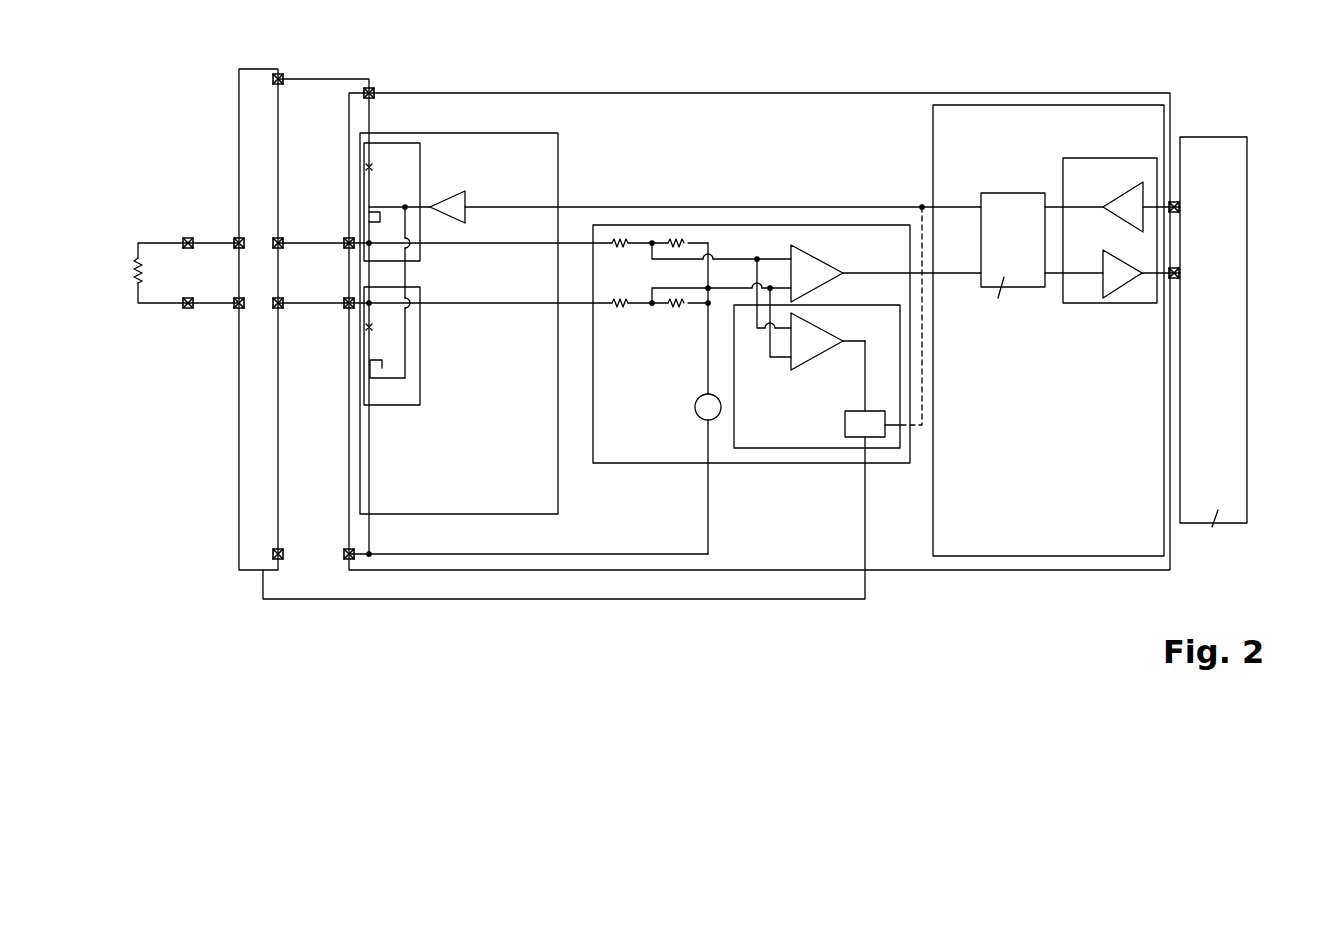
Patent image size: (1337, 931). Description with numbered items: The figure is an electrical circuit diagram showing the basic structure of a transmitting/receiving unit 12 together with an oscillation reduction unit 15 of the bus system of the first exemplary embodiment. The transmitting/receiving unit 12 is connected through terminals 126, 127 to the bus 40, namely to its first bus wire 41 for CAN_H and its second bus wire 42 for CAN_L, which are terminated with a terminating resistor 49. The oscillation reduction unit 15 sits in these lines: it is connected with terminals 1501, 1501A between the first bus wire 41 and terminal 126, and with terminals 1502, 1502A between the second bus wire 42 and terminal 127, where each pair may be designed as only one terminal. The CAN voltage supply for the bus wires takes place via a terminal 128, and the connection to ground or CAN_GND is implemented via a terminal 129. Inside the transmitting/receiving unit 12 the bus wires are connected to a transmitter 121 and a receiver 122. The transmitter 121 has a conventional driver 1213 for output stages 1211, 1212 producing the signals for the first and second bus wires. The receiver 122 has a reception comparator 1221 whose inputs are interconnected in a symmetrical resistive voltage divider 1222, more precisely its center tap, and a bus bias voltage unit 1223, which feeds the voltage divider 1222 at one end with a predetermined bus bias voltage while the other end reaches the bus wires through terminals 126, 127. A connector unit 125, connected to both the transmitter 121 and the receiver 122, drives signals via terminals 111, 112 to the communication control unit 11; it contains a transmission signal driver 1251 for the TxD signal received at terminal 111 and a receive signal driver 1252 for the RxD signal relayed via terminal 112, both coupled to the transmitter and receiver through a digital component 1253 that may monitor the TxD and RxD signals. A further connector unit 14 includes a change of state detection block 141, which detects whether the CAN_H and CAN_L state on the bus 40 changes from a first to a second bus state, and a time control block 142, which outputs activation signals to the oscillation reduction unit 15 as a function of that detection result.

The communication control unit 11 is at (1208, 137).
The transmitting/receiving unit 12 is at (791, 93).
The connector unit 14 is at (793, 450).
The oscillation reduction unit 15 is at (253, 69).
The bus 40 is at (214, 216).
The first bus wire 41 is at (188, 243).
The second bus wire 42 is at (194, 310).
The terminating resistor 49 is at (136, 259).
The terminal 111 is at (1179, 204).
The terminal 112 is at (1179, 276).
The transmitter 121 is at (560, 160).
The receiver 122 is at (641, 463).
The connector unit 125 is at (1069, 99).
The terminal 126 is at (347, 241).
The terminal 127 is at (347, 305).
The terminal 128 is at (372, 87).
The terminal 129 is at (346, 552).
The change of state detection block 141 is at (820, 352).
The time control block 142 is at (845, 425).
The output stage 1211 is at (422, 174).
The output stage 1212 is at (422, 391).
The driver 1213 is at (468, 202).
The reception comparator 1221 is at (828, 264).
The resistive voltage divider 1222 is at (710, 220).
The bus bias voltage unit 1223 is at (698, 399).
The transmission signal driver 1251 is at (1117, 188).
The receive signal driver 1252 is at (1119, 296).
The digital component 1253 is at (1010, 192).
The terminal 1501 is at (278, 236).
The terminal 1502 is at (278, 307).
The terminal 1501A is at (233, 238).
The terminal 1502A is at (239, 307).